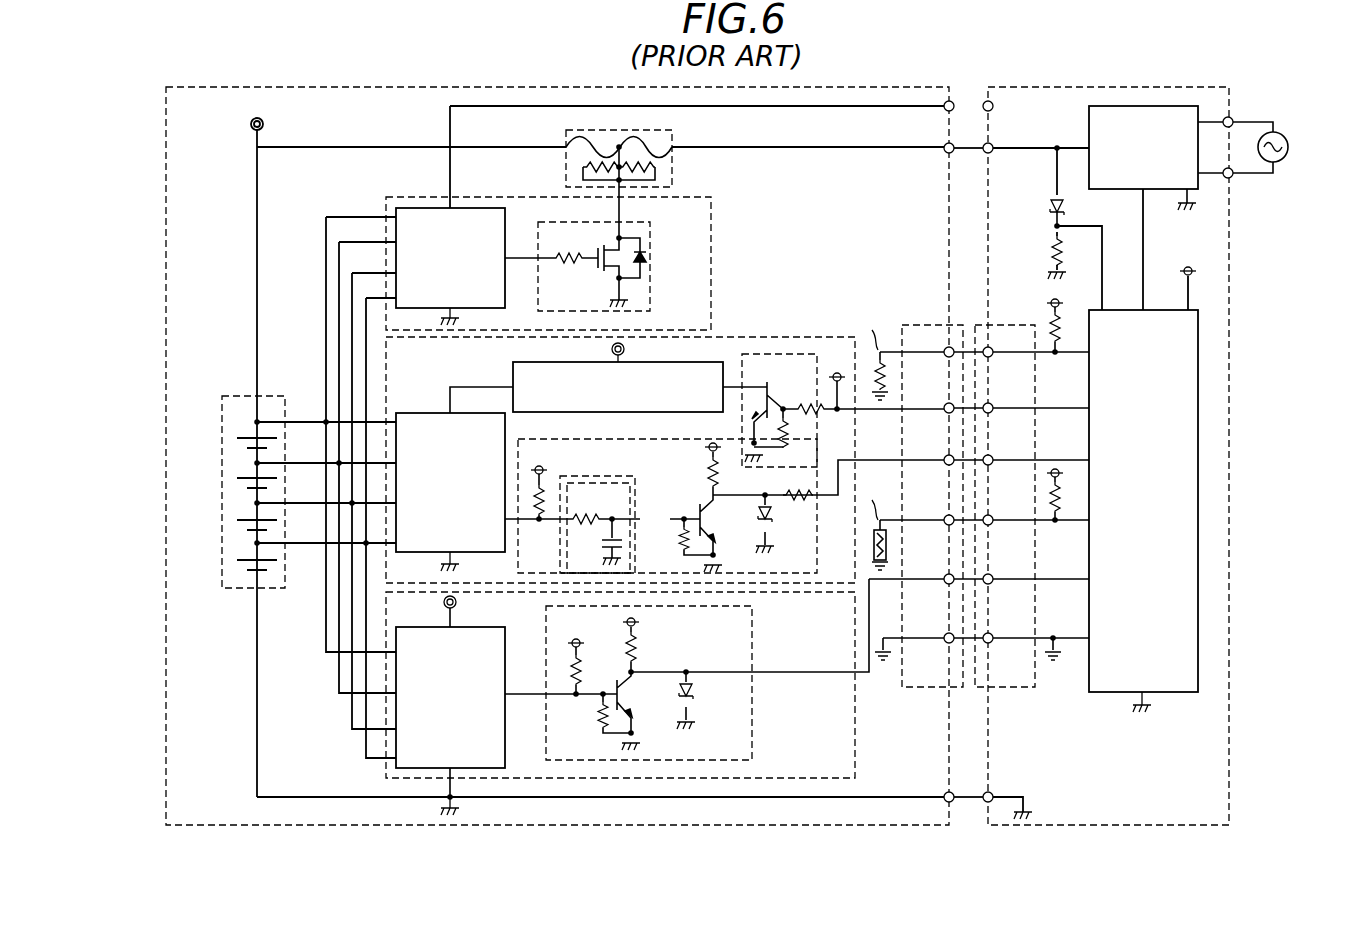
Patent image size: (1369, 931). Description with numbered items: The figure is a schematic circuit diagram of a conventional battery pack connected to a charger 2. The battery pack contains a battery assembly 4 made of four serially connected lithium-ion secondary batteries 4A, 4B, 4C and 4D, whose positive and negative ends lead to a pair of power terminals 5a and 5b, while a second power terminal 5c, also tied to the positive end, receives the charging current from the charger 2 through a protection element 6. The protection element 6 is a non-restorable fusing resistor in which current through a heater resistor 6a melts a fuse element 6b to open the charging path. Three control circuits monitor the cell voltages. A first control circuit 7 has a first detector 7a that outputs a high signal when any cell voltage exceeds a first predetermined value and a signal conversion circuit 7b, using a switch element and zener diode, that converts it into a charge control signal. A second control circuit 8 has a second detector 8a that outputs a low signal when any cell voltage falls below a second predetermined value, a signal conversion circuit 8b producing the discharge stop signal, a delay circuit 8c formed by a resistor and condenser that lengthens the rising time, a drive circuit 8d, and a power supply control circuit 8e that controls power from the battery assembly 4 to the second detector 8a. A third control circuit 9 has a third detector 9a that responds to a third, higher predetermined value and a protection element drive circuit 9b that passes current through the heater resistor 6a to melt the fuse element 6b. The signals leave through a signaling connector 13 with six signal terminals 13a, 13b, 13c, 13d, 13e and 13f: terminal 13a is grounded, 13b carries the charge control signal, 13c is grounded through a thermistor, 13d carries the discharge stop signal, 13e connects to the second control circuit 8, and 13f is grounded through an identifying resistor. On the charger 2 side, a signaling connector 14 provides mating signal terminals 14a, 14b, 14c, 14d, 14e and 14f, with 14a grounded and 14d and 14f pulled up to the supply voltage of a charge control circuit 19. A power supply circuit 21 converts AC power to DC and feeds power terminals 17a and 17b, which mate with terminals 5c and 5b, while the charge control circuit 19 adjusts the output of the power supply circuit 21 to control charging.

The charger 2 is at (1144, 455).
The battery assembly 4 is at (166, 118).
The secondary battery 4A is at (237, 565).
The secondary battery 4B is at (237, 525).
The secondary battery 4C is at (237, 484).
The secondary battery 4D is at (237, 442).
The power terminal 5a is at (944, 110).
The power terminal 5b is at (946, 793).
The second power terminal 5c is at (946, 153).
The protection element 6 is at (614, 179).
The heater resistor 6a is at (655, 175).
The fuse element 6b is at (568, 150).
The first control circuit 7 is at (640, 688).
The first detector 7a is at (505, 636).
The signal conversion circuit 7b is at (752, 622).
The second control circuit 8 is at (667, 442).
The second detector 8a is at (425, 413).
The signal conversion circuit 8b is at (727, 494).
The delay circuit 8c is at (560, 558).
The drive circuit 8d is at (758, 354).
The power supply control circuit 8e is at (513, 374).
The third control circuit 9 is at (566, 247).
The third detector 9a is at (425, 206).
The protection element drive circuit 9b is at (650, 300).
The signaling connector 13 is at (920, 485).
The signal terminal 13a is at (932, 651).
The signal terminal 13b is at (932, 592).
The signal terminal 13c is at (932, 534).
The signal terminal 13d is at (932, 475).
The signal terminal 13e is at (932, 422).
The signal terminal 13f is at (932, 366).
The signaling connector 14 is at (1032, 485).
The signal terminal 14a is at (1005, 651).
The signal terminal 14b is at (1005, 592).
The signal terminal 14c is at (1005, 534).
The signal terminal 14d is at (1005, 475).
The signal terminal 14e is at (1005, 422).
The signal terminal 14f is at (1004, 366).
The power terminal 17a is at (990, 154).
The power terminal 17b is at (990, 793).
The charge control circuit 19 is at (1097, 692).
The power supply circuit 21 is at (1089, 120).